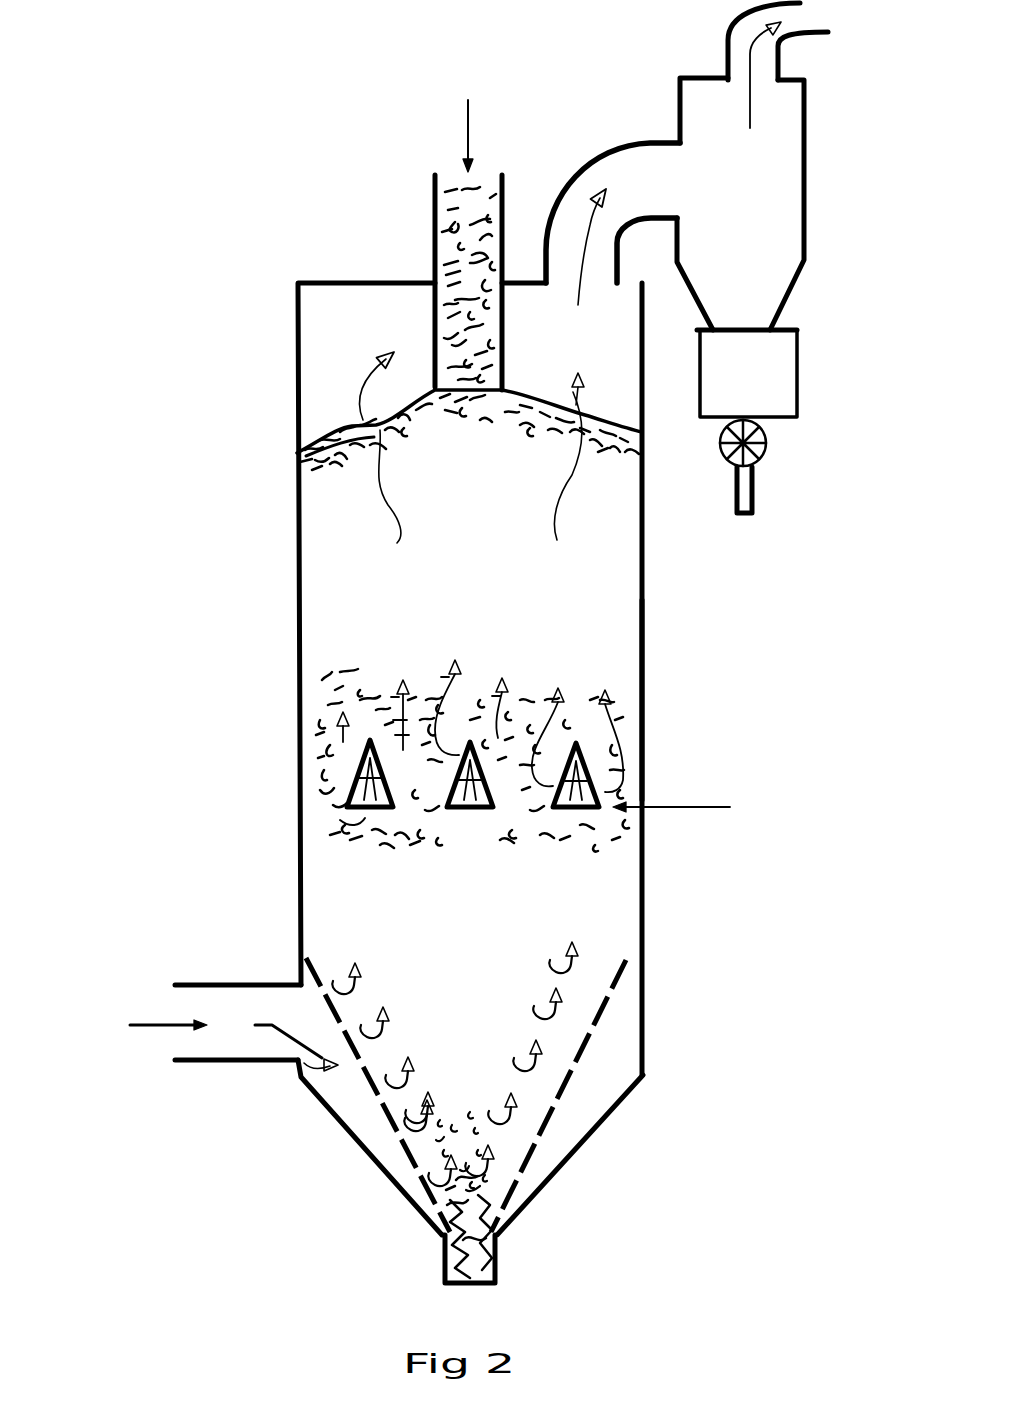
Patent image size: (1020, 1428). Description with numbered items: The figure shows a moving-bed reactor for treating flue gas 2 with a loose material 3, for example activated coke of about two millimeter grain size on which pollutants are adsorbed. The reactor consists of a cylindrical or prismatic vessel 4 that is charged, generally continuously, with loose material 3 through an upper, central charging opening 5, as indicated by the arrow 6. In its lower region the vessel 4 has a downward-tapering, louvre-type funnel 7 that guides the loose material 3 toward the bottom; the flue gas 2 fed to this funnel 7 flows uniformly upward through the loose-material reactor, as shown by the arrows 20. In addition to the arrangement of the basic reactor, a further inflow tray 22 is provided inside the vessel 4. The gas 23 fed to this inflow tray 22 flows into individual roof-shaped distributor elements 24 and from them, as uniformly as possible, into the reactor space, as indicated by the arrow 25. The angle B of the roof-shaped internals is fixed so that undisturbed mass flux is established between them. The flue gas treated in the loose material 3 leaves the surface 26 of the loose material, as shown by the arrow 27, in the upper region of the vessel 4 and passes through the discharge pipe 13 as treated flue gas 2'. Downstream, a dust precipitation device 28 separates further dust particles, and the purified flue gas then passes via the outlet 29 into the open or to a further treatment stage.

The flue gas 2 is at (234, 996).
The treated flue gas 2' is at (617, 245).
The loose material 3 is at (620, 592).
The vessel 4 is at (650, 687).
The charging opening 5 is at (435, 218).
The arrow 6 is at (465, 140).
The funnel 7 is at (596, 1102).
The discharge pipe 13 is at (597, 147).
The arrows 20 is at (400, 1027).
The inflow tray 22 is at (560, 797).
The gas 23 is at (708, 807).
The roof-shaped distributor elements 24 is at (357, 812).
The arrow 25 is at (447, 707).
The surface 26 is at (320, 440).
The arrow 27 is at (367, 362).
The dust precipitation device 28 is at (765, 202).
The outlet 29 is at (728, 37).
The angle β B is at (363, 738).